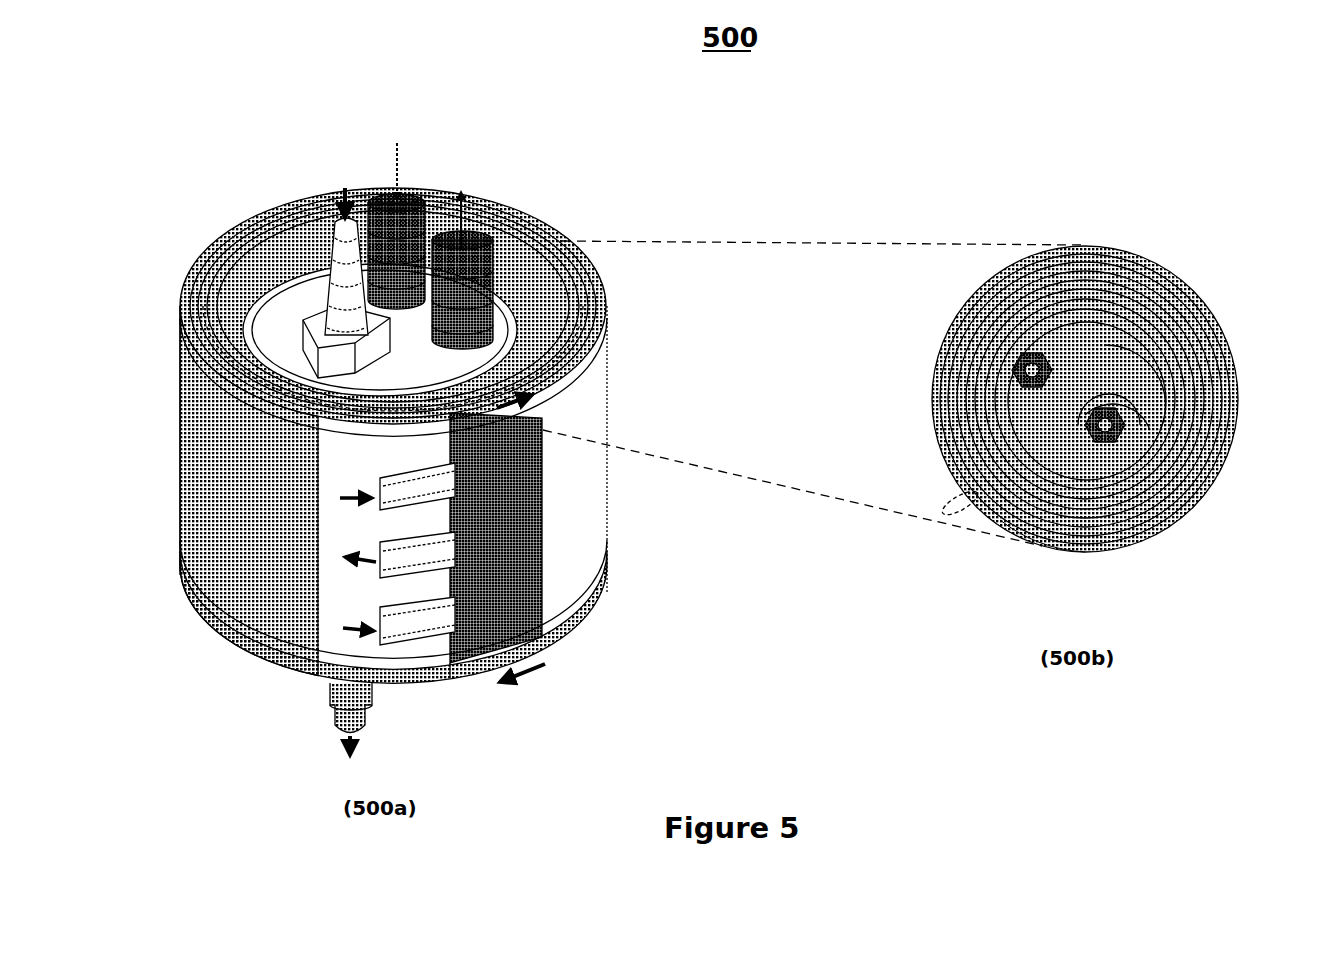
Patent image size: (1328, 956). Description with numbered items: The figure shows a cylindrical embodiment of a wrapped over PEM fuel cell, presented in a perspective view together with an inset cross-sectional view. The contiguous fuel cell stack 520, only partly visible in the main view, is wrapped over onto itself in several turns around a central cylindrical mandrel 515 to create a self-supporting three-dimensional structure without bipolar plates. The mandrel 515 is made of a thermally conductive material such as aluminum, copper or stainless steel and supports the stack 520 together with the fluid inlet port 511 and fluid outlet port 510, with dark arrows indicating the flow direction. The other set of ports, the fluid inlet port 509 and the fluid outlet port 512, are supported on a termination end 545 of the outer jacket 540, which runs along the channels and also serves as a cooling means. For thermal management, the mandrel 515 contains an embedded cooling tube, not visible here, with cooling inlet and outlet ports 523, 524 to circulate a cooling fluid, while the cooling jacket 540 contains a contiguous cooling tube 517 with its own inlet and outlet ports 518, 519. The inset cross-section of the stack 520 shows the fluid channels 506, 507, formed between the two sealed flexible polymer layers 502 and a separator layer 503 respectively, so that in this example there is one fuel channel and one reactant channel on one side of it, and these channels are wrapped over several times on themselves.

The sealed flexible polymer layers 502 is at (1108, 552).
The separator layer 503 is at (1165, 516).
The fluid channel 506 is at (1062, 550).
The fluid channel 507 is at (1183, 490).
The fluid inlet port 509 is at (383, 490).
The fluid outlet port 510 is at (485, 252).
The fluid inlet port 511 is at (375, 207).
The fluid outlet port 512 is at (380, 554).
The central cylindrical mandrel 515 is at (280, 345).
The contiguous cooling tube 517 is at (605, 607).
The cooling tube inlet port 518 is at (540, 393).
The cooling tube outlet port 519 is at (540, 665).
The contiguous fuel cell stack 520 is at (263, 280).
The cooling tube inlet port 523 is at (335, 243).
The cooling tube outlet port 524 is at (333, 712).
The outer jacket 540 is at (205, 445).
The termination end 545 is at (542, 505).